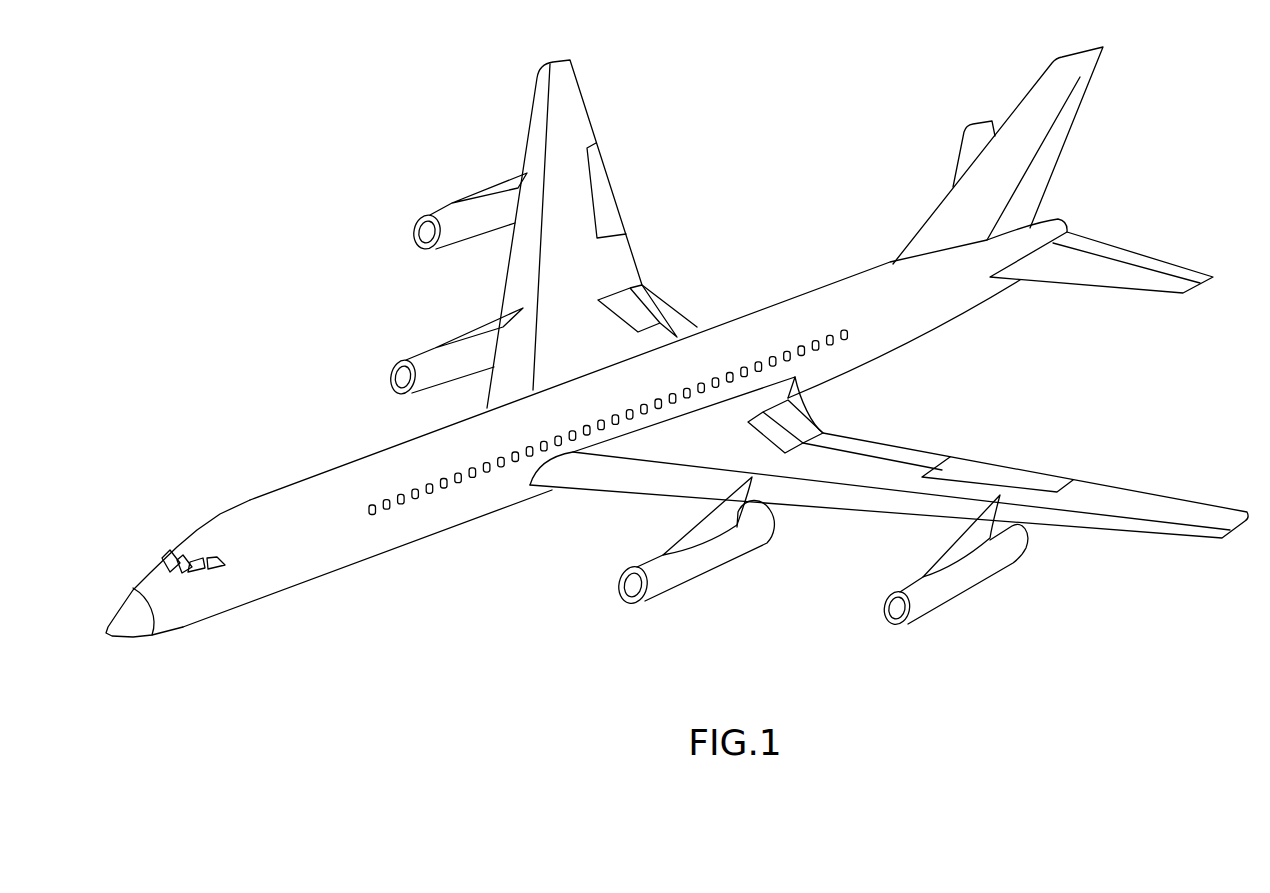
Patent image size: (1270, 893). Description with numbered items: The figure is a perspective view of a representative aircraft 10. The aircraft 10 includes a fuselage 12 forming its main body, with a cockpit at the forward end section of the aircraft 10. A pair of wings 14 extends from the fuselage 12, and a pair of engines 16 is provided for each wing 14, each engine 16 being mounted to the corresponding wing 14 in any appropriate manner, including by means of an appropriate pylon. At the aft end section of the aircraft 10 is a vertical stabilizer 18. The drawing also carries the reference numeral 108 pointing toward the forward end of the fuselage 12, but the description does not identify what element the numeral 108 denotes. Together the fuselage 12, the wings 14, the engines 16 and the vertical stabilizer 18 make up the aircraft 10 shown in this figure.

The aircraft 10 is at (186, 140).
The fuselage 12 is at (436, 559).
The wing 14 is at (602, 138).
The engine 16 is at (432, 318).
The vertical stabilizer 18 is at (1022, 294).
The nose section 108 is at (157, 524).